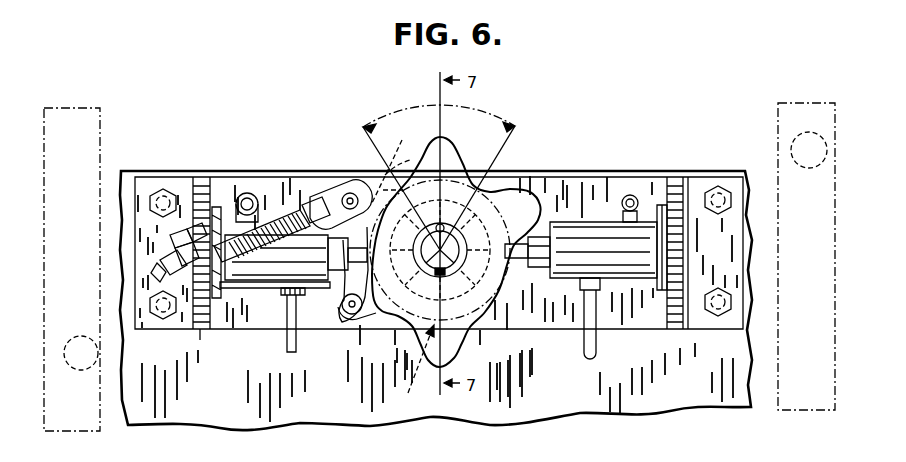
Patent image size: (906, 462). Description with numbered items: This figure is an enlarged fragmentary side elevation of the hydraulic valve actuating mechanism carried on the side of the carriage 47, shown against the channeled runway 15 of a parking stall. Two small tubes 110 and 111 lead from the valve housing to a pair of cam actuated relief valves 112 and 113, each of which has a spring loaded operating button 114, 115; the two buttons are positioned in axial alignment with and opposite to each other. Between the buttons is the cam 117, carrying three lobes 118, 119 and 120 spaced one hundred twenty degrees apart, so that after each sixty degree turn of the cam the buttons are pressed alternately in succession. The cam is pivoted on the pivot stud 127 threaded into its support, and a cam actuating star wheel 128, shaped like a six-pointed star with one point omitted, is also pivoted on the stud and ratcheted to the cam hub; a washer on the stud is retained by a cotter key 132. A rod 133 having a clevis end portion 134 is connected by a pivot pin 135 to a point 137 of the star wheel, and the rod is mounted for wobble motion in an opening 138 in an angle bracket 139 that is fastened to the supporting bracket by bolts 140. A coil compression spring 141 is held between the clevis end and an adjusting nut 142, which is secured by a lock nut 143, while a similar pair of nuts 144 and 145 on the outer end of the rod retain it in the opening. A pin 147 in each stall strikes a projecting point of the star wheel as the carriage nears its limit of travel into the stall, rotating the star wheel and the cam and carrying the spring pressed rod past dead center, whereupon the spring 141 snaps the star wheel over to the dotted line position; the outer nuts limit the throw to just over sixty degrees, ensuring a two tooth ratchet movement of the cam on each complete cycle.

The channeled runway 15 is at (82, 406).
The carriage 47 is at (678, 382).
The small tube 110 is at (287, 338).
The small tube 111 is at (596, 340).
The cam actuated relief valve 112 is at (305, 258).
The cam actuated relief valve 113 is at (588, 242).
The spring loaded operating button 114 is at (357, 315).
The spring loaded operating button 115 is at (546, 230).
The cam 117 is at (458, 210).
The lobe 118 is at (396, 162).
The lobe 119 is at (413, 369).
The lobe 120 is at (504, 188).
The pivot stud 127 is at (447, 258).
The cam actuating star wheel 128 is at (462, 350).
The cotter key 132 is at (440, 224).
The rod 133 is at (268, 222).
The clevis end portion 134 is at (312, 204).
The pivot pin 135 is at (327, 196).
The point of the star wheel 137 is at (348, 193).
The opening 138 is at (203, 331).
The angle bracket 139 is at (201, 188).
The bolt 140 is at (152, 197).
The coil compression spring 141 is at (290, 216).
The adjusting nut 142 is at (217, 206).
The lock nut 143 is at (238, 212).
The nut 144 is at (186, 250).
The nut 145 is at (181, 229).
The pin 147 is at (78, 370).